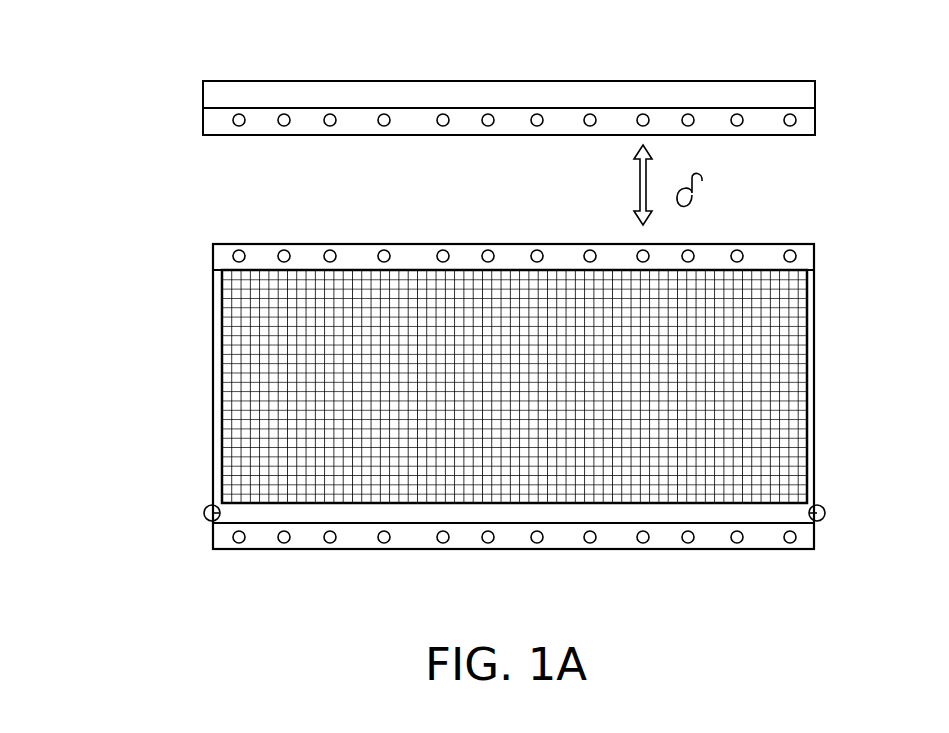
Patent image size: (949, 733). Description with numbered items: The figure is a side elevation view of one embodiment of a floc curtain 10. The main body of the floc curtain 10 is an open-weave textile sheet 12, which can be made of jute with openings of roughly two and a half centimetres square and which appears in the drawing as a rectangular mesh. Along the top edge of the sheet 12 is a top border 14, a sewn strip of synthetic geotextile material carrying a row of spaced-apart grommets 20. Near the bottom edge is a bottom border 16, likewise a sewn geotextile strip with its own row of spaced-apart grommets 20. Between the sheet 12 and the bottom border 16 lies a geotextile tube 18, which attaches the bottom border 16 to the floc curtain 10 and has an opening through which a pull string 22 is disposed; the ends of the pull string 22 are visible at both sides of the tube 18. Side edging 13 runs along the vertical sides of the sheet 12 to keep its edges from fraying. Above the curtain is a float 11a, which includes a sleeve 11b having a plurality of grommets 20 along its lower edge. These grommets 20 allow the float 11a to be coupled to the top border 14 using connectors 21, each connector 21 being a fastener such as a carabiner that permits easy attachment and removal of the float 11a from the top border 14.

The floc curtain 10 is at (110, 125).
The float 11a is at (580, 68).
The sleeve 11b is at (720, 92).
The open-weave textile sheet 12 is at (240, 330).
The side edging 13 is at (213, 397).
The top border 14 is at (465, 244).
The bottom border 16 is at (608, 549).
The geotextile tube 18 is at (766, 513).
The grommets 20 is at (239, 127).
The connector 21 is at (704, 178).
The pull string 22 is at (184, 522).